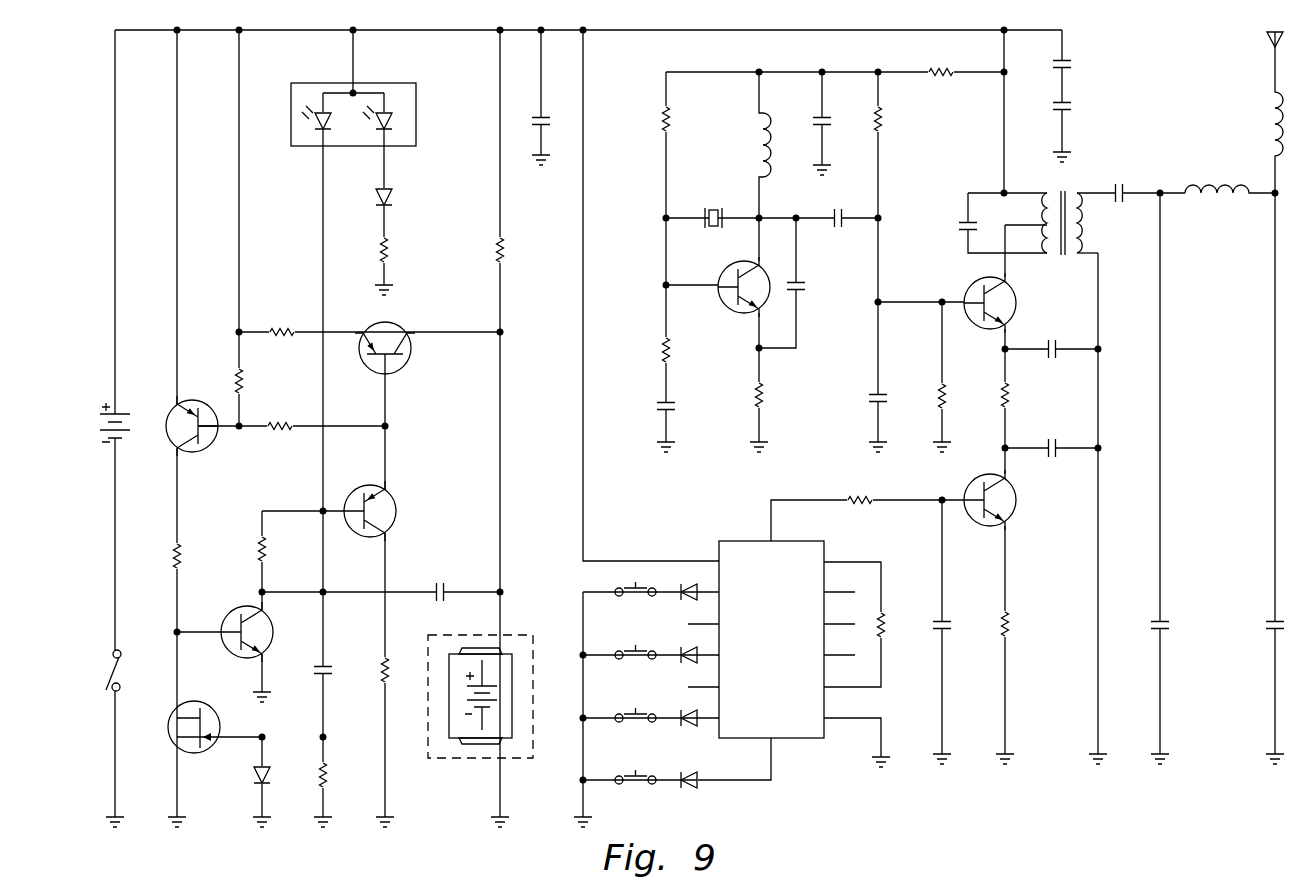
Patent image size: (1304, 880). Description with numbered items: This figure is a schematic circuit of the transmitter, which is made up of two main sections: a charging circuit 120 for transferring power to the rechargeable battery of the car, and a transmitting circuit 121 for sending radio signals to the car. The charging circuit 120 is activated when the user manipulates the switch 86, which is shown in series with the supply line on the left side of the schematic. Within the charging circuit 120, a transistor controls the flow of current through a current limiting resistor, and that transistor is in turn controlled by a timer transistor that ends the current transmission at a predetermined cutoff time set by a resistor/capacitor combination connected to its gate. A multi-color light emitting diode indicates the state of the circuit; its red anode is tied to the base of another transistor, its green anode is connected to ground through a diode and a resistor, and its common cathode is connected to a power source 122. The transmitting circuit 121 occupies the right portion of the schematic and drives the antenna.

The charging circuit 120 is at (78, 255).
The transmitting circuit 121 is at (1152, 100).
The power source 122 is at (98, 422).
The switch 86 is at (105, 675).